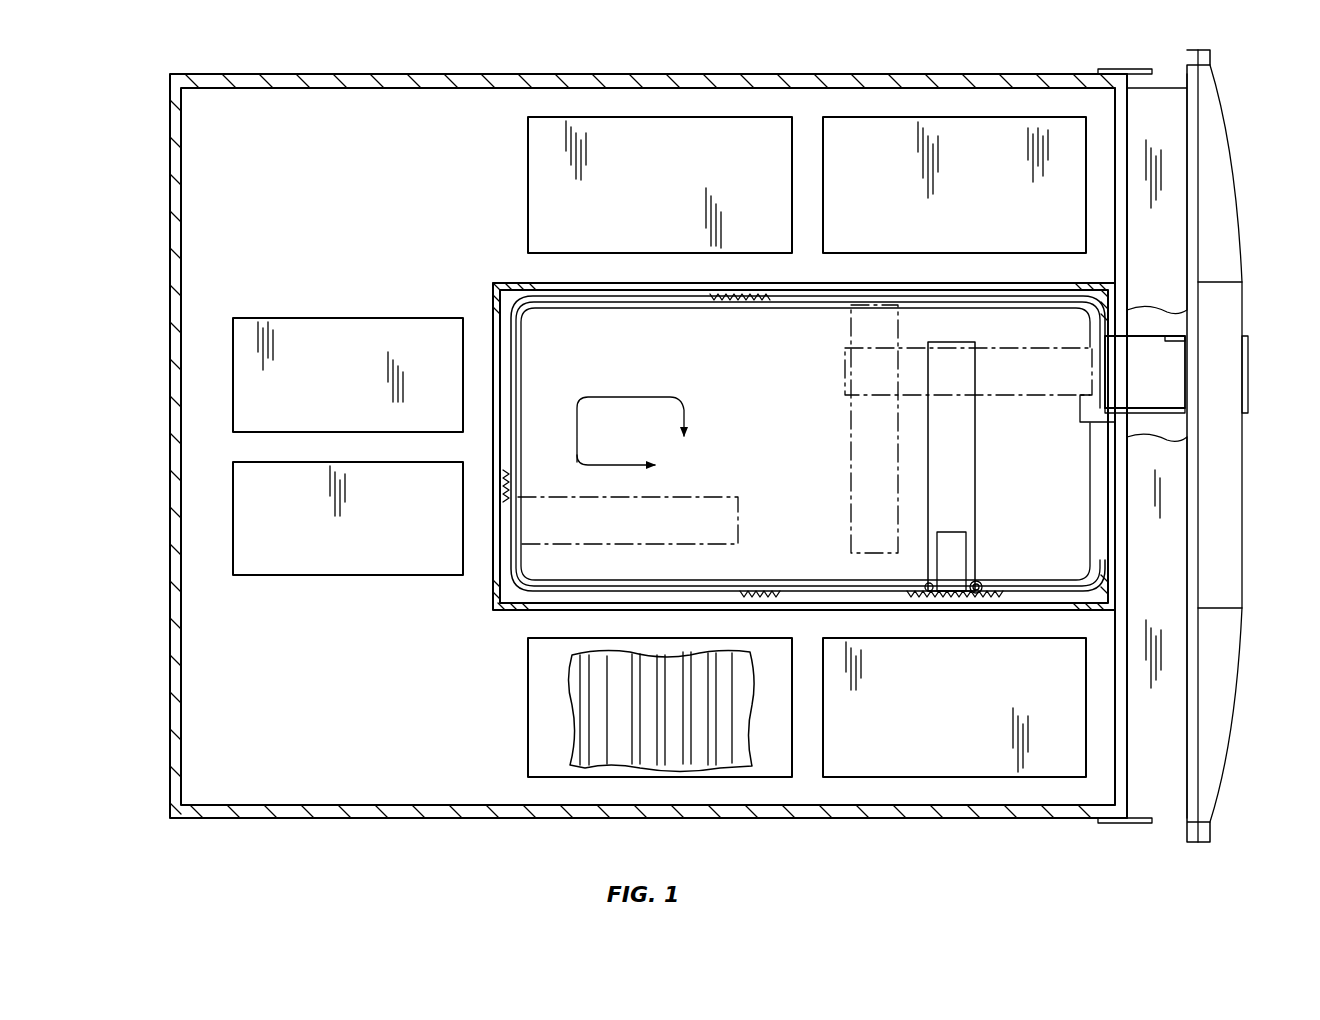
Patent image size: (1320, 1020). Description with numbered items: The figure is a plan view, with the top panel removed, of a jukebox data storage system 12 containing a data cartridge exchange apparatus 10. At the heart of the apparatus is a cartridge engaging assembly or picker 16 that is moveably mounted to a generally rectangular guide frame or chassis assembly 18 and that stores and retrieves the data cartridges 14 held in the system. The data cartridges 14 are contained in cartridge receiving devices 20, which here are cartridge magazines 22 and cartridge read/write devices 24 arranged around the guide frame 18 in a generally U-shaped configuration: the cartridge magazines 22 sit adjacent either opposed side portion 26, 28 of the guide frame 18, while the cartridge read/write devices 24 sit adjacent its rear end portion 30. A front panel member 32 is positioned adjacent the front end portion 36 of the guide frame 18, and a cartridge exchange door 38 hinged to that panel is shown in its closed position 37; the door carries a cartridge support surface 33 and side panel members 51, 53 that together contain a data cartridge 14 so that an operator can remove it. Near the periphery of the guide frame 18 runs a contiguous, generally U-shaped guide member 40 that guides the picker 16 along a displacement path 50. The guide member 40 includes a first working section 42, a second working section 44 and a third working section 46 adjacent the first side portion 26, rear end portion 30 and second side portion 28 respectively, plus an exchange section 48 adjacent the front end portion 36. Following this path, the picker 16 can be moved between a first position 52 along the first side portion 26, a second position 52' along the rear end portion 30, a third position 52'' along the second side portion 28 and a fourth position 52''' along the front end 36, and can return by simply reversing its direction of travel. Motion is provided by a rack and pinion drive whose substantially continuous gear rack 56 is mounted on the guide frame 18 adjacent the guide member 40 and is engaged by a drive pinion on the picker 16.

The data cartridge exchange apparatus 10 is at (596, 426).
The jukebox data storage system 12 is at (427, 70).
The data cartridge 14 is at (586, 716).
The cartridge engaging assembly 16 is at (975, 460).
The guide frame assembly 18 is at (490, 596).
The cartridge receiving device 20 is at (462, 190).
The cartridge magazine 22 is at (838, 117).
The cartridge read/write device 24 is at (262, 462).
The first side portion 26 is at (955, 610).
The second side portion 28 is at (975, 283).
The rear end portion 30 is at (493, 514).
The front panel member 32 is at (1240, 172).
The cartridge support surface 33 is at (1145, 372).
The front end portion 36 is at (1117, 537).
The closed position 37 is at (1248, 350).
The cartridge exchange door 38 is at (1250, 392).
The guide member 40 is at (1065, 582).
The first working section 42 is at (823, 584).
The second working section 44 is at (516, 350).
The third working section 46 is at (726, 310).
The exchange section 48 is at (1085, 420).
The displacement path 50 is at (577, 431).
The side panel member 51 is at (1152, 413).
The first position 52 is at (984, 467).
The second position 52' is at (643, 499).
The third position 52'' is at (850, 429).
The fourth position 52''' is at (940, 360).
The side panel member 53 is at (1176, 336).
The gear rack 56 is at (768, 588).